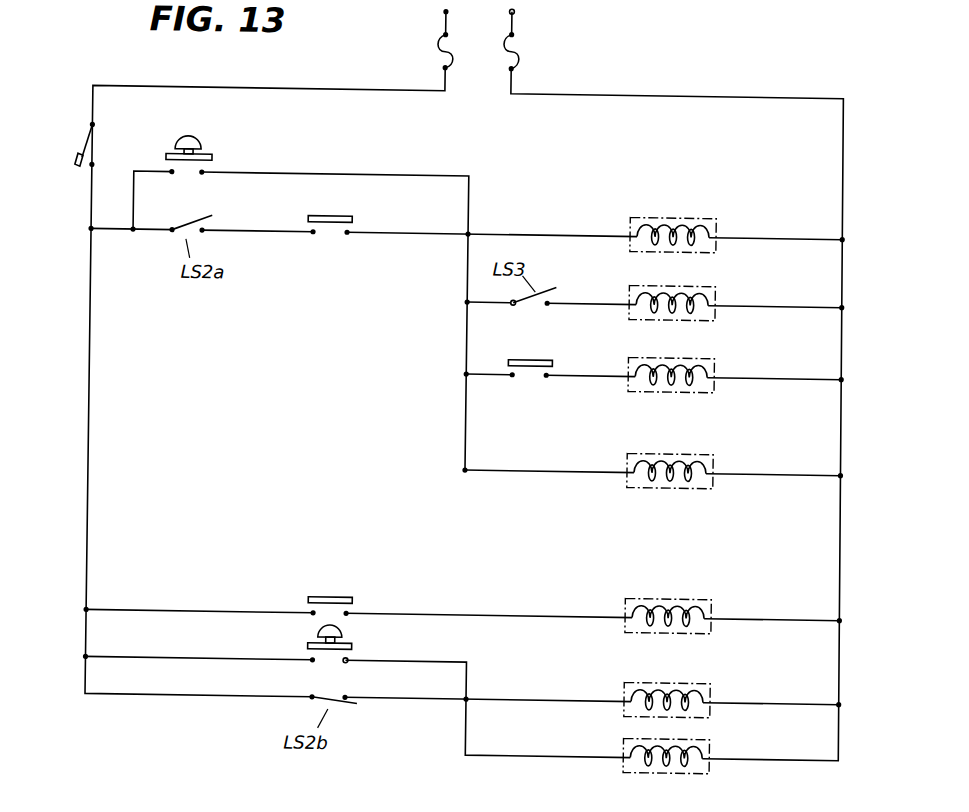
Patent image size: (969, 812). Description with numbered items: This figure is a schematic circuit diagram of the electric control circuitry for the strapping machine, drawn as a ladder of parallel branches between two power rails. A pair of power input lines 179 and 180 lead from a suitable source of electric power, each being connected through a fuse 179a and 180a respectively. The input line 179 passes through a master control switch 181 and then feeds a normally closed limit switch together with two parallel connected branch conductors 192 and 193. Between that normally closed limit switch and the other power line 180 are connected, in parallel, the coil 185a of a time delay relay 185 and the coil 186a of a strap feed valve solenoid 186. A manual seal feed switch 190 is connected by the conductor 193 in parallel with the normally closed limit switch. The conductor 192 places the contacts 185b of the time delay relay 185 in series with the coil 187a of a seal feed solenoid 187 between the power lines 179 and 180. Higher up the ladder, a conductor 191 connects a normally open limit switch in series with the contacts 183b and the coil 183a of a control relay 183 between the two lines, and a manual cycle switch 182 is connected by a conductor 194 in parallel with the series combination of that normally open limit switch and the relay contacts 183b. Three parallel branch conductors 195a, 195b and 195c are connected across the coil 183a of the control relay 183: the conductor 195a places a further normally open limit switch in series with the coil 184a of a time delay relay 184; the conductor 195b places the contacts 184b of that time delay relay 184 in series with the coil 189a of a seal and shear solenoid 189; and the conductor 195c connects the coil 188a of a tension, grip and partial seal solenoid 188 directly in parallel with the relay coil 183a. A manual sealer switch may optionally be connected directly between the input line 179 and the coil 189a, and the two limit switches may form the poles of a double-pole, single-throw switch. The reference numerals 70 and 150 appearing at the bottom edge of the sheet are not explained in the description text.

The strapping machine 70 is at (545, 800).
The control circuit 150 is at (316, 804).
The power input line 179 is at (235, 366).
The fuse 179a is at (407, 52).
The power input line 180 is at (702, 383).
The fuse 180a is at (545, 52).
The master control switch 181 is at (62, 140).
The manual cycle switch 182 is at (213, 149).
The control relay 183 is at (634, 217).
The coil of control relay 183a is at (714, 228).
The contacts of control relay 183b is at (377, 216).
The time delay relay 184 is at (706, 302).
The coil of time delay relay 184a is at (717, 298).
The contacts of time delay relay 184b is at (557, 349).
The time delay relay 185 is at (623, 689).
The coil of time delay relay 185a is at (718, 696).
The contacts of time delay relay 185b is at (378, 590).
The strap feed valve solenoid 186 is at (700, 764).
The coil of strap feed valve solenoid 186a is at (714, 753).
The seal feed solenoid 187 is at (702, 612).
The coil of seal feed solenoid 187a is at (714, 609).
The tension, grip and partial seal solenoid 188 is at (684, 474).
The coil of tension, grip and partial seal solenoid 188a is at (627, 487).
The seal and shear solenoid 189 is at (695, 378).
The coil of seal and shear solenoid 189a is at (714, 370).
The manual seal feed switch 190 is at (362, 643).
The conductor 191 is at (136, 224).
The branch conductor 192 is at (199, 592).
The branch conductor 193 is at (198, 641).
The conductor 194 is at (335, 305).
The branch conductor 195a is at (445, 304).
The branch conductor 195b is at (443, 382).
The branch conductor 195c is at (533, 492).